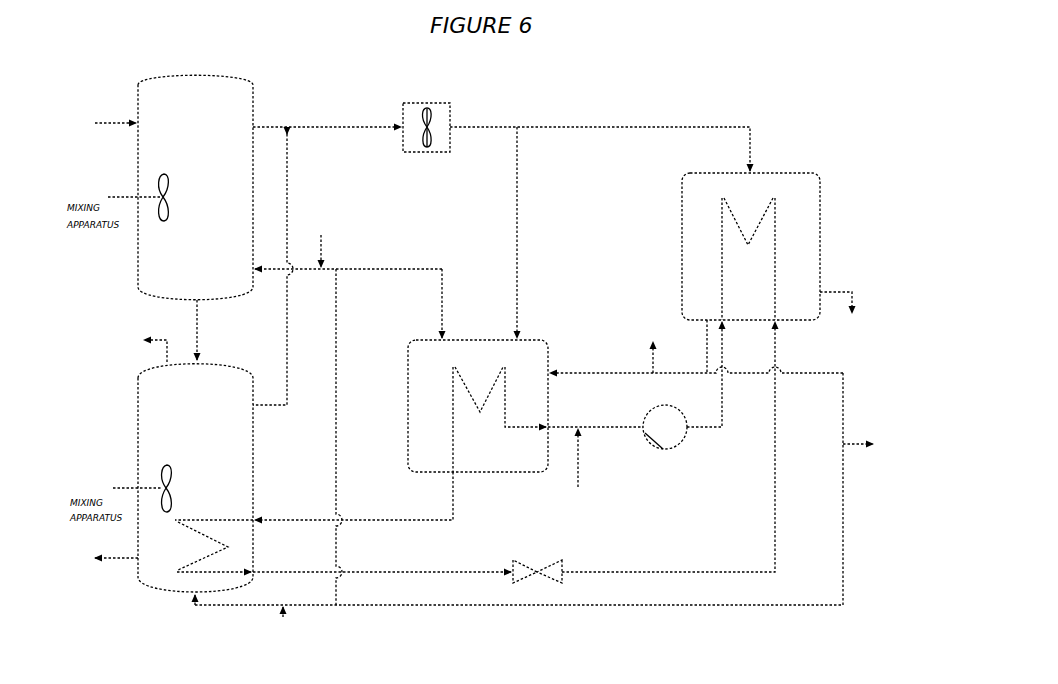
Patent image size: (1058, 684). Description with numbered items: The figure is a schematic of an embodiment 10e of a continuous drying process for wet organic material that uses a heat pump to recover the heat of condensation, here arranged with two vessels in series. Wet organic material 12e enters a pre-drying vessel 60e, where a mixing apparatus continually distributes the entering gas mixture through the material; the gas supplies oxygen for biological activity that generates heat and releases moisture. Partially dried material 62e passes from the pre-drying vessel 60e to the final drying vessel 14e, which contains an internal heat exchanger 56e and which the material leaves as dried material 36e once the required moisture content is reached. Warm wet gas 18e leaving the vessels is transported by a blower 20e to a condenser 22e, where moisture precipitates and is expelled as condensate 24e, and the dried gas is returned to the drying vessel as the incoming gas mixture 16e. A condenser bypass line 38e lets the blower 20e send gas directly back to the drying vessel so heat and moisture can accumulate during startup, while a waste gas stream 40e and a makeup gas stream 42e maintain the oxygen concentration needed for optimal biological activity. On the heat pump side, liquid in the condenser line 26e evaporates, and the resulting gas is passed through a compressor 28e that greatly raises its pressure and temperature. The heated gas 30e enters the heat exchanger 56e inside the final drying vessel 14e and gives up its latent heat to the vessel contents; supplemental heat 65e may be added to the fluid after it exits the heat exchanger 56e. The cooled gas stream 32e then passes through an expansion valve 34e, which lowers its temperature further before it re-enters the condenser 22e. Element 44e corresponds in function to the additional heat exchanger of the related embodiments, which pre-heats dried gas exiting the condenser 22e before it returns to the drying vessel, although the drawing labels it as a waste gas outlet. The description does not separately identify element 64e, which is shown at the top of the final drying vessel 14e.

The drying system embodiment 10e is at (100, 108).
The organic material to be dried 12e is at (105, 141).
The final drying vessel 14e is at (195, 478).
The gas mixture 16e is at (516, 449).
The warm wet gas 18e is at (501, 266).
The blower 20e is at (434, 135).
The condenser 22e is at (751, 237).
The condensate 24e is at (851, 297).
The condenser line 26e is at (729, 336).
The compressor 28e is at (635, 394).
The heated gas 30e is at (314, 521).
The cooled gas stream 32e is at (476, 447).
The expansion valve 34e is at (533, 556).
The dried material 36e is at (252, 449).
The condenser bypass line 38e is at (512, 232).
The waste gas stream 40e is at (696, 350).
The makeup gas stream 42e is at (300, 428).
The additional heat exchanger 44e is at (862, 454).
The heat exchanger 56e is at (478, 406).
The pre-drying vessel 60e is at (195, 187).
The partially dried material 62e is at (210, 330).
The vent line 64e is at (150, 351).
The supplemental heat 65e is at (569, 464).